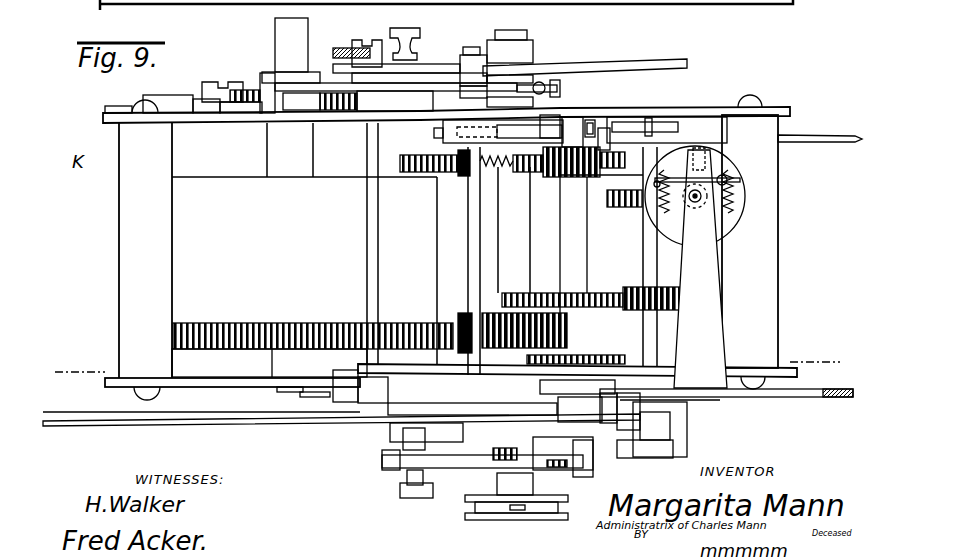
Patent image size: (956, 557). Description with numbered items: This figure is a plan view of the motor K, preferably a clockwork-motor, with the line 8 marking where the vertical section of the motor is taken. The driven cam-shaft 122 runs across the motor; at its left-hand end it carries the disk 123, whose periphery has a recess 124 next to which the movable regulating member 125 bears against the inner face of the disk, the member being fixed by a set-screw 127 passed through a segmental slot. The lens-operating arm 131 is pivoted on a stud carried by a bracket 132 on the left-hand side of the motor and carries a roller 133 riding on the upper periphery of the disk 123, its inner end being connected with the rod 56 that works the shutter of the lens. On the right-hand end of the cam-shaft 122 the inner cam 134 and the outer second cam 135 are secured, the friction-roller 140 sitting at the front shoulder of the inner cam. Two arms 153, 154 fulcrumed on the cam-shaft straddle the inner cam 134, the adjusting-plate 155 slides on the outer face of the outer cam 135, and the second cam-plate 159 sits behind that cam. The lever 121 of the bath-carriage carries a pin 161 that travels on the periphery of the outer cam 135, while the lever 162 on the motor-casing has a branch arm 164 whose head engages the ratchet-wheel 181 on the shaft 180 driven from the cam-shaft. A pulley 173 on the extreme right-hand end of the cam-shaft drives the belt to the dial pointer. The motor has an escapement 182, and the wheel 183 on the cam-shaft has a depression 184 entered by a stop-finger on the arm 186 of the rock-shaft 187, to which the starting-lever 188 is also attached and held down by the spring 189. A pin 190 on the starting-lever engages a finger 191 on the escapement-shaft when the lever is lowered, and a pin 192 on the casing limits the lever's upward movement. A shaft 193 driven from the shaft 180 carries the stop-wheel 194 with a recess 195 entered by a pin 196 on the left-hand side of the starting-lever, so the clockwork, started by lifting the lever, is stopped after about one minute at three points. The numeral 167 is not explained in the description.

The section line 8 is at (443, 367).
The motor K is at (420, 260).
The rod 56 is at (545, 83).
The lever 121 is at (770, 399).
The cam-shaft 122 is at (513, 38).
The disk 123 is at (592, 58).
The recess 124 is at (455, 62).
The movable member 125 is at (428, 70).
The set-screw 127 is at (402, 30).
The lens-operating arm 131 is at (432, 93).
The bracket 132 is at (268, 73).
The roller 133 is at (478, 92).
The cam 134 is at (587, 408).
The second cam 135 is at (383, 462).
The friction-roller 140 is at (577, 387).
The arm 153 is at (482, 421).
The arm 154 is at (521, 425).
The adjusting-plate 155 is at (356, 372).
The second cam-plate 159 is at (383, 455).
The pin 161 is at (563, 454).
The lever 162 is at (293, 475).
The branch arm 164 is at (452, 372).
The bar 167 is at (470, 398).
The pulley 173 is at (540, 515).
The shaft 180 is at (585, 250).
The ratchet-wheel 181 is at (604, 356).
The escapement 182 is at (732, 234).
The wheel 183 is at (497, 131).
The depression 184 is at (612, 128).
The arm 186 is at (565, 127).
The rock-shaft 187 is at (478, 246).
The starting-lever 188 is at (820, 130).
The spring 189 is at (478, 165).
The pin 190 is at (695, 150).
The finger 191 is at (705, 168).
The pin 192 is at (598, 127).
The shaft 193 is at (650, 269).
The wheel 194 is at (680, 118).
The recess 195 is at (655, 120).
The pin 196 is at (645, 142).